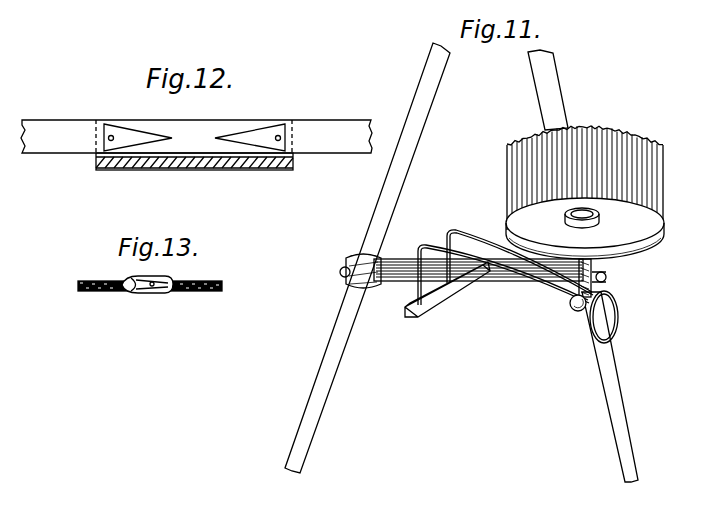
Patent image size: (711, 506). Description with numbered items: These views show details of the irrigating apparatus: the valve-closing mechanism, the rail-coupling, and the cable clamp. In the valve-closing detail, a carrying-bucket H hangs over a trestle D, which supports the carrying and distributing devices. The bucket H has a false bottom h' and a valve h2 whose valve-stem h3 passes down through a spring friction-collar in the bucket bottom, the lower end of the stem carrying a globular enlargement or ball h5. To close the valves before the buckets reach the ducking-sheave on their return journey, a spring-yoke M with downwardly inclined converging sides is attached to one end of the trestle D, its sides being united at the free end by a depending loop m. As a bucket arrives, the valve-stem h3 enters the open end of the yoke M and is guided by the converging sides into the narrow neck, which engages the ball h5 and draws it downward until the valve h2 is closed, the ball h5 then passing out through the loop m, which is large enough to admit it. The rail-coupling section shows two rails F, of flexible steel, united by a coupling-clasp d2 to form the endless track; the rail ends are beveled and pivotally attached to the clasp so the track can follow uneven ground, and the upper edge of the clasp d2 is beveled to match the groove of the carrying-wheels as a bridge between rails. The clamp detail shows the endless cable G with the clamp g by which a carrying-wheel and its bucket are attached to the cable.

In FIG. 12, the rail F is at (196, 136).
In FIG. 12, the coupling-clasp d2 is at (194, 174).
In FIG. 13, the endless cable G is at (150, 298).
In FIG. 13, the clamp g is at (147, 296).
In FIG. 11, the trestle D is at (367, 258).
In FIG. 11, the carrying-bucket H is at (585, 178).
In FIG. 11, the false bottom h' is at (585, 228).
In FIG. 11, the valve h2 is at (564, 214).
In FIG. 11, the valve-stem h3 is at (607, 283).
In FIG. 11, the ball h5 is at (574, 312).
In FIG. 11, the spring-yoke M is at (499, 262).
In FIG. 11, the loop m is at (617, 317).